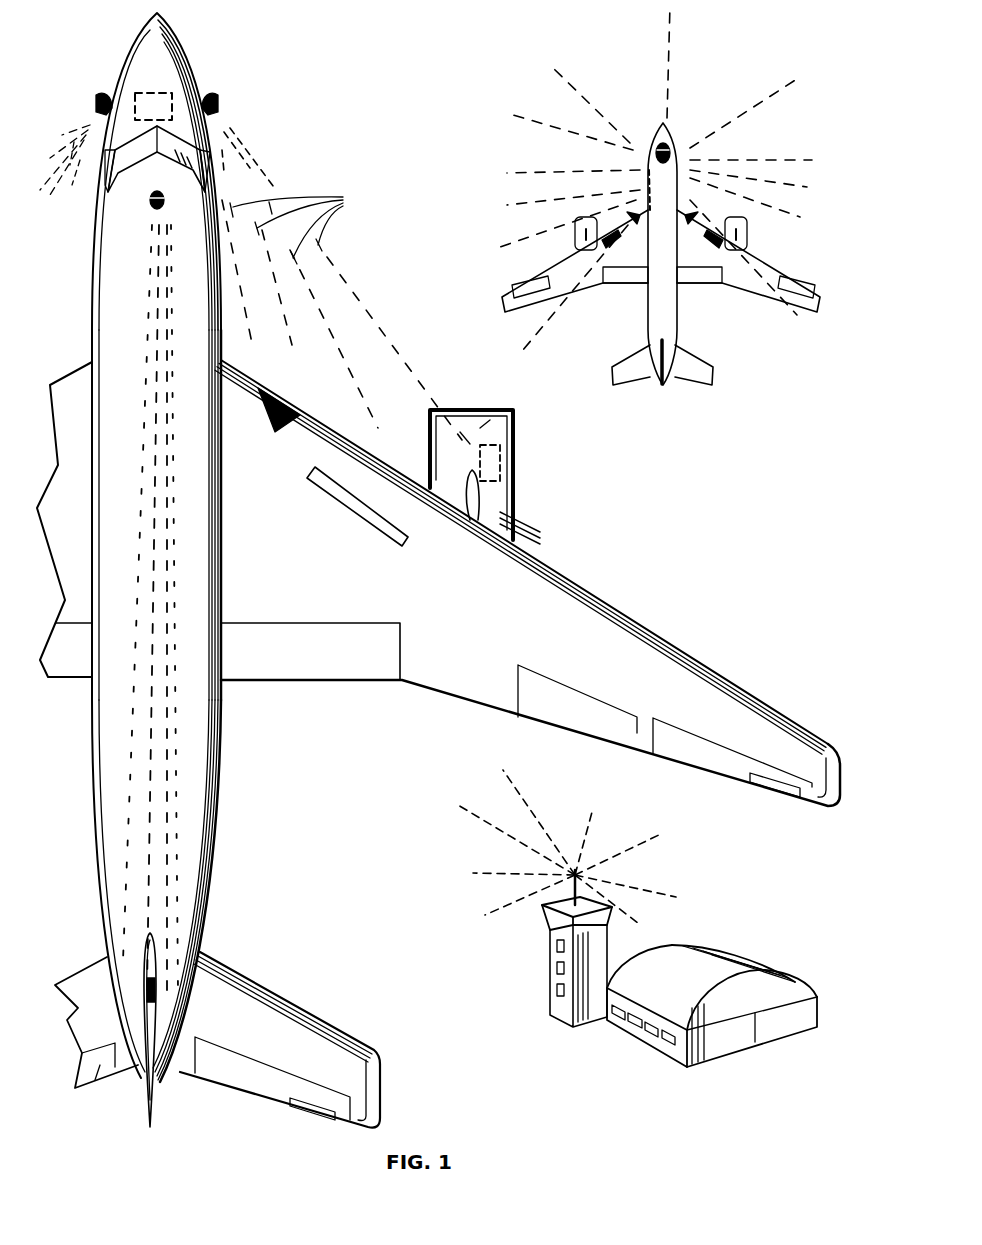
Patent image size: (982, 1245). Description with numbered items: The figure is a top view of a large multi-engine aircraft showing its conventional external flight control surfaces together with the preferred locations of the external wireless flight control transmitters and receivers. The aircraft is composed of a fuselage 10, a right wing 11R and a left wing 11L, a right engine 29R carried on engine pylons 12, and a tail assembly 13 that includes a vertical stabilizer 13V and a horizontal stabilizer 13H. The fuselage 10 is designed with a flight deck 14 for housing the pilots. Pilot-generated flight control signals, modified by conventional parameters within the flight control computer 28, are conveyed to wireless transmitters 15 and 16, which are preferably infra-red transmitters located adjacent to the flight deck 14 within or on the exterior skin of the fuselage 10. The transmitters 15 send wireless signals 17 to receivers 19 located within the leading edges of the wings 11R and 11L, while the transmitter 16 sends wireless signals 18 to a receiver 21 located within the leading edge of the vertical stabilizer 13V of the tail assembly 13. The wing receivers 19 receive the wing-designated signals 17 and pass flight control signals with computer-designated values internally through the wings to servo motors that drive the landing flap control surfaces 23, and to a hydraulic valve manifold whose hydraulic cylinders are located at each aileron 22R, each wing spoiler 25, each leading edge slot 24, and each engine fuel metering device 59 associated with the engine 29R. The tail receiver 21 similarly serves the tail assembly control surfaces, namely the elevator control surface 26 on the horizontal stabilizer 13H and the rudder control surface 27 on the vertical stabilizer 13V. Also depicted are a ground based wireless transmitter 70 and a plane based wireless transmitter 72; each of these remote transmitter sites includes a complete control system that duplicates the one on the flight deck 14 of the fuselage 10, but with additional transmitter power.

The fuselage 10 is at (112, 262).
The left aircraft wing 11L is at (82, 390).
The right aircraft wing 11R is at (635, 663).
The engine pylons 12 is at (478, 504).
The tail assembly 13 is at (133, 1078).
The vertical stabilizer of tail assembly 13V is at (138, 1035).
The horizontal stabilizer of tail assembly 13H is at (283, 1037).
The flight deck area (cockpit) 14 is at (170, 150).
The wireless transmitters to wings and engines 15 is at (100, 98).
The wireless transmitter to tail assembly 16 is at (148, 200).
The visible wireless signals to engine and wing control surfaces 17 is at (300, 227).
The visible wireless signals to tail assembly control surfaces 18 is at (157, 282).
The wireless receivers for wing flight control surfaces 19 is at (272, 394).
The wireless receivers for tail assembly flight control surfaces 21 is at (160, 990).
The right aileron flight control surface 22R is at (730, 762).
The landing flap control surfaces 23 is at (72, 652).
The leading edge slot control surfaces 24 is at (600, 608).
The wing spoiler control surfaces 25 is at (343, 493).
The elevator control surface 26 is at (98, 1073).
The rudder control surface 27 is at (152, 1090).
The wireless system conventional flight control computer 28 is at (152, 93).
The right engine 29R is at (512, 412).
The wireless system engine fuel metering device 59 is at (500, 466).
The ground based wireless transmitter 70 is at (598, 893).
The plane based wireless transmitter 72 is at (682, 167).